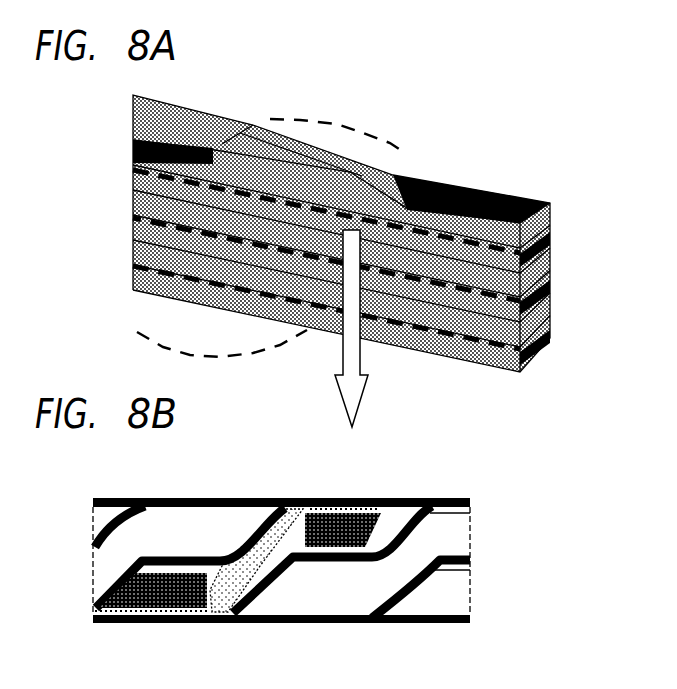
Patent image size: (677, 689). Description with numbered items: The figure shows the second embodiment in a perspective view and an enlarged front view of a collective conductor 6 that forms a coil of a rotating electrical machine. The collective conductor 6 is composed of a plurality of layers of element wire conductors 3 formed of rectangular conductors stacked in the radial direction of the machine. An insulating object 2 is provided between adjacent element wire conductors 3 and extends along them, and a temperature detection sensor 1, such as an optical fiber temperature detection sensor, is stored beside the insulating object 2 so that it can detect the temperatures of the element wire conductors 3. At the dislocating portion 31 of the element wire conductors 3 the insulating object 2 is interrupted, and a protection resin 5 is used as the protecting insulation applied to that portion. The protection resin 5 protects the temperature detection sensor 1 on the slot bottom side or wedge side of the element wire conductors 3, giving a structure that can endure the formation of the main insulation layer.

In FIG. 8A, the temperature detection sensor 1 is at (335, 160).
In FIG. 8B, the temperature detection sensor 1 is at (137, 615).
In FIG. 8A, the insulating object 2 is at (552, 263).
In FIG. 8B, the insulating object 2 is at (377, 515).
In FIG. 8A, the element wire conductor 3 is at (552, 333).
In FIG. 8B, the element wire conductor 3 is at (180, 498).
In FIG. 8B, the dislocating portion 31 is at (133, 505).
In FIG. 8B, the protection resin 5 is at (260, 588).
In FIG. 8A, the collective conductor 6 is at (527, 377).
In FIG. 8B, the collective conductor 6 is at (492, 562).